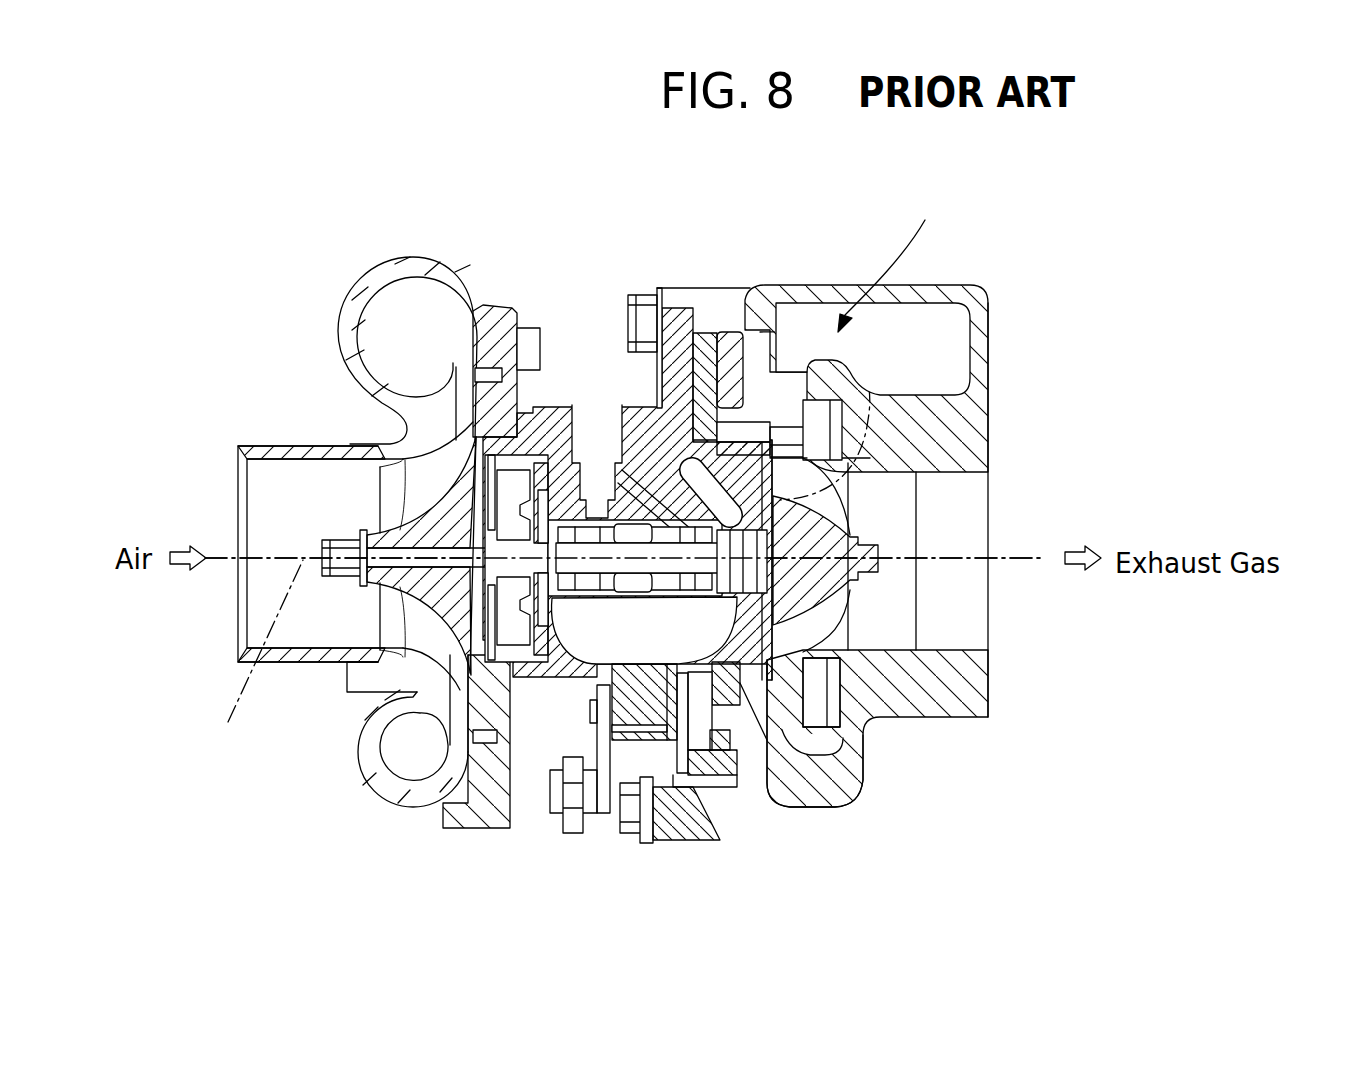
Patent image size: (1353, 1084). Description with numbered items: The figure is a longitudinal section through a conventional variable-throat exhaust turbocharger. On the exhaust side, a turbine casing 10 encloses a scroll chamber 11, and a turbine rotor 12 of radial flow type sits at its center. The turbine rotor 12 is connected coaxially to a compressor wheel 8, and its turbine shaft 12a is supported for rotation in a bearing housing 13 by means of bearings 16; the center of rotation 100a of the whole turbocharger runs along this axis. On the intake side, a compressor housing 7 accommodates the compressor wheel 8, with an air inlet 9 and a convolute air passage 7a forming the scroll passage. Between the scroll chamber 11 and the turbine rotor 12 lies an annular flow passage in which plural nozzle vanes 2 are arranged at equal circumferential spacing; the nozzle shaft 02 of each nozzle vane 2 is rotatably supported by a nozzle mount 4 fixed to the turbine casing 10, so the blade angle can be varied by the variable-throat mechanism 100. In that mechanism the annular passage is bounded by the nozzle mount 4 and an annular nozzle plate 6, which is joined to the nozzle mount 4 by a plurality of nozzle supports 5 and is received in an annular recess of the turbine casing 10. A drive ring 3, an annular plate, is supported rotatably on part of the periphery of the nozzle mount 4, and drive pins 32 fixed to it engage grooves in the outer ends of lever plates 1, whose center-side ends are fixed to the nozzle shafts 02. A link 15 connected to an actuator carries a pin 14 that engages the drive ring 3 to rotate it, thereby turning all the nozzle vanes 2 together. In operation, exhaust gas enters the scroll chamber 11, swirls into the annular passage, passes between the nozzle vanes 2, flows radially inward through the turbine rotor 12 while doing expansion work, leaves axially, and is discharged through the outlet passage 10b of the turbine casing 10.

The lever plate 1 is at (625, 514).
The nozzle vane 2 is at (748, 432).
The drive ring 3 is at (745, 430).
The nozzle mount 4 is at (745, 690).
The nozzle support 5 is at (812, 752).
The nozzle plate 6 is at (820, 442).
The compressor housing 7 is at (392, 523).
The convolute air passage 7a is at (378, 355).
The compressor wheel 8 is at (427, 485).
The air inlet 9 is at (258, 592).
The turbine casing 10 is at (955, 543).
The outlet passage 10b is at (980, 647).
The scroll chamber 11 is at (900, 335).
The turbine rotor 12 is at (827, 622).
The turbine shaft 12a is at (878, 695).
The bearing housing 13 is at (553, 405).
The pin 14 is at (698, 770).
The link 15 is at (607, 813).
The bearing 16 is at (592, 590).
The drive pin 32 is at (712, 380).
The nozzle shaft 02 is at (745, 425).
The variable-throat mechanism 100 is at (900, 260).
The center of rotation 100a is at (243, 663).